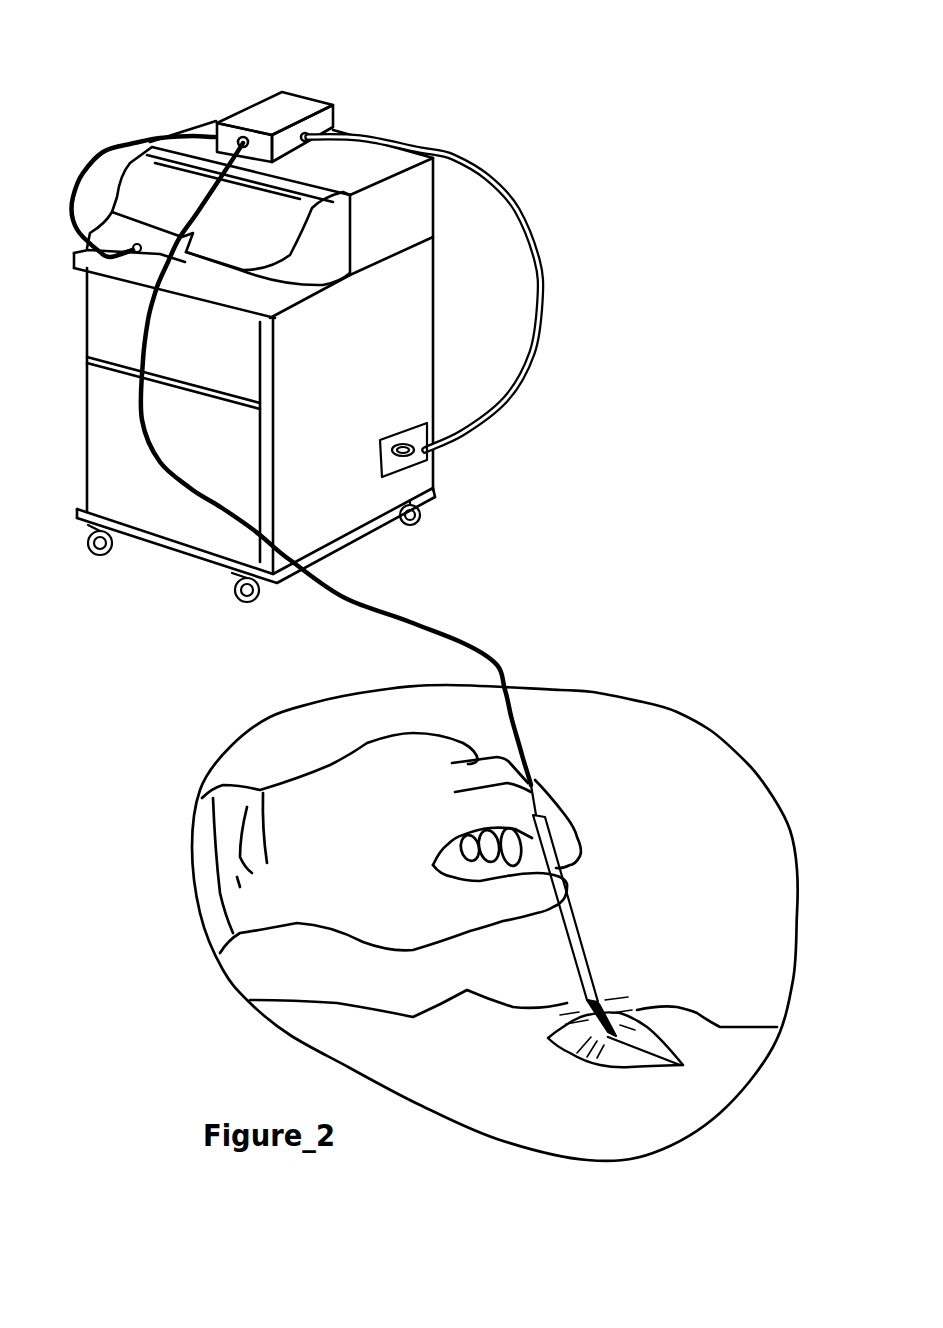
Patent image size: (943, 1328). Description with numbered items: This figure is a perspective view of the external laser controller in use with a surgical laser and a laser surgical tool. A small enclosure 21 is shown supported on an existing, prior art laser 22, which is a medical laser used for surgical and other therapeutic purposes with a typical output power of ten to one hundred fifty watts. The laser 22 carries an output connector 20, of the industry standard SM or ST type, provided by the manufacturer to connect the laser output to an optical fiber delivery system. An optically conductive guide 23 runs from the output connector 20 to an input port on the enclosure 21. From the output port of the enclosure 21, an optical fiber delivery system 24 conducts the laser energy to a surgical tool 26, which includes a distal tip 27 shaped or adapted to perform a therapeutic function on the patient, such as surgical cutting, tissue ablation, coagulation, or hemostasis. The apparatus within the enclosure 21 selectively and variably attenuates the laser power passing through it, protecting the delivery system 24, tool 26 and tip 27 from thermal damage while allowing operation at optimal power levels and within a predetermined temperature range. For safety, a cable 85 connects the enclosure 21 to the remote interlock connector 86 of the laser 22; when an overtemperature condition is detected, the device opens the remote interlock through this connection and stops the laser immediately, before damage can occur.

The output connector 20 is at (135, 244).
The enclosure 21 is at (345, 110).
The laser 22 is at (433, 198).
The optically conductive guide 23 is at (80, 167).
The optical fiber delivery system 24 is at (452, 633).
The surgical tool 26 is at (583, 941).
The distal tip 27 is at (660, 1070).
The cable 85 is at (538, 250).
The remote interlock connector 86 is at (420, 450).